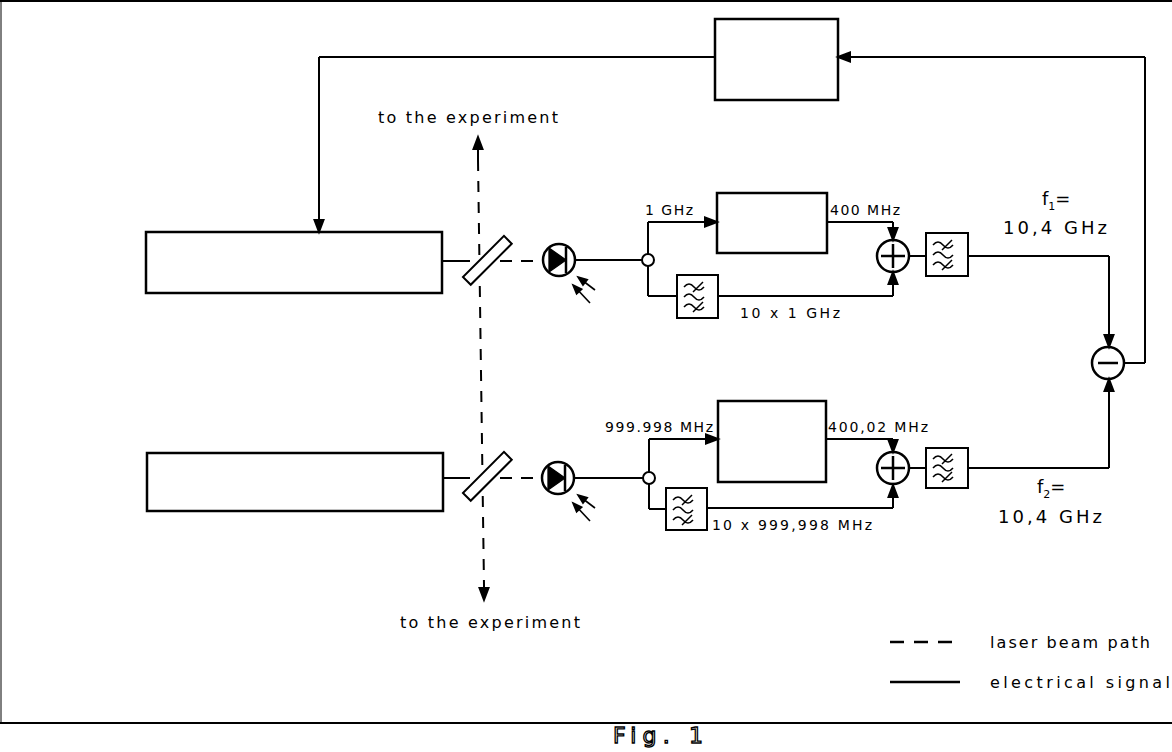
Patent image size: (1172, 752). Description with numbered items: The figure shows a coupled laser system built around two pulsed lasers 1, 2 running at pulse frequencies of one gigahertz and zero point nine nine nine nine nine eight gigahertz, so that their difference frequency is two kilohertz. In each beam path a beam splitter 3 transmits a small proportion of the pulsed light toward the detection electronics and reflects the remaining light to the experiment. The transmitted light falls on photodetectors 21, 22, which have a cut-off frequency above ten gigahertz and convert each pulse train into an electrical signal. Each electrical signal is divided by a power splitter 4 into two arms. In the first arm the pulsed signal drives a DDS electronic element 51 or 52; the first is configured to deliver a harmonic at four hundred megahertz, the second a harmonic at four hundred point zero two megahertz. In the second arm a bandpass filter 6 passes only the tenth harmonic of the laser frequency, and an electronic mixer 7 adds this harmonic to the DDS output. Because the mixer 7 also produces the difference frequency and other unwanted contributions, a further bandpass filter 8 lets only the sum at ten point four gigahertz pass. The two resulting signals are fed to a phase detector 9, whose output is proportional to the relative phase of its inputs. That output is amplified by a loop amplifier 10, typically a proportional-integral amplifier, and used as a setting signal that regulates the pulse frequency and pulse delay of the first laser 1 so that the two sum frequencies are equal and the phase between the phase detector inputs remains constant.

The pulsed laser 1 is at (225, 215).
The pulsed laser 2 is at (247, 438).
The beam splitter 3 is at (472, 303).
The power splitter 4 is at (632, 292).
The bandpass filter 6 is at (684, 342).
The electronic mixer 7 is at (911, 224).
The bandpass filter 8 is at (939, 302).
The phase detector 9 is at (1069, 366).
The loop amplifier 10 is at (776, 59).
The photodetector 21 is at (557, 298).
The photodetector 22 is at (552, 434).
The DDS electronic element 51 is at (763, 169).
The DDS electronic element 52 is at (808, 384).